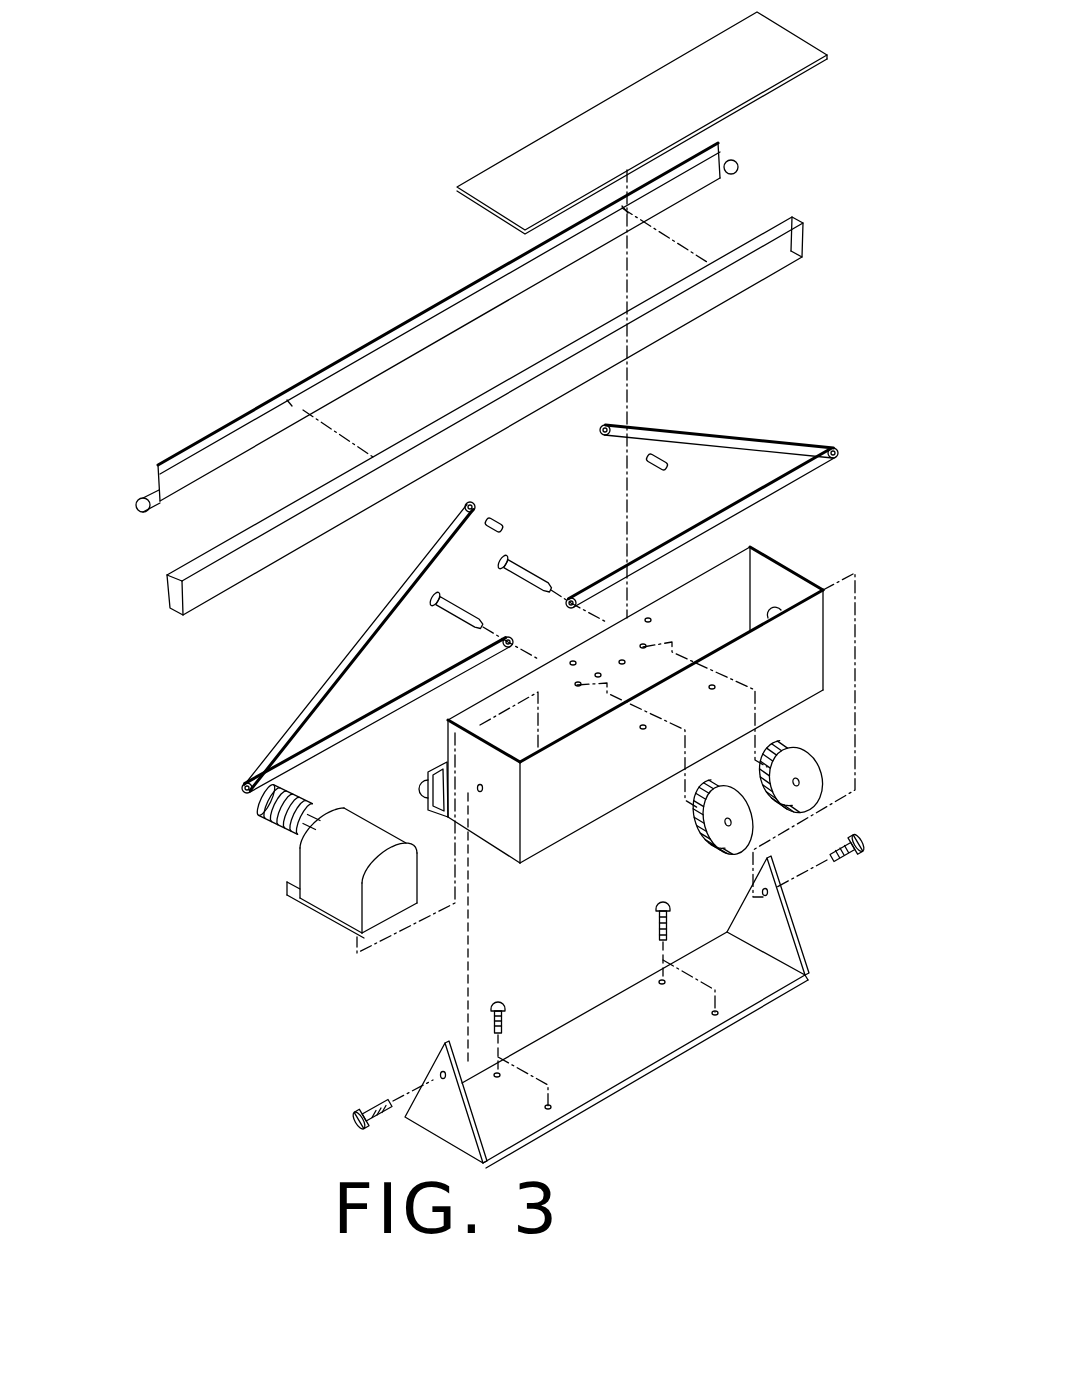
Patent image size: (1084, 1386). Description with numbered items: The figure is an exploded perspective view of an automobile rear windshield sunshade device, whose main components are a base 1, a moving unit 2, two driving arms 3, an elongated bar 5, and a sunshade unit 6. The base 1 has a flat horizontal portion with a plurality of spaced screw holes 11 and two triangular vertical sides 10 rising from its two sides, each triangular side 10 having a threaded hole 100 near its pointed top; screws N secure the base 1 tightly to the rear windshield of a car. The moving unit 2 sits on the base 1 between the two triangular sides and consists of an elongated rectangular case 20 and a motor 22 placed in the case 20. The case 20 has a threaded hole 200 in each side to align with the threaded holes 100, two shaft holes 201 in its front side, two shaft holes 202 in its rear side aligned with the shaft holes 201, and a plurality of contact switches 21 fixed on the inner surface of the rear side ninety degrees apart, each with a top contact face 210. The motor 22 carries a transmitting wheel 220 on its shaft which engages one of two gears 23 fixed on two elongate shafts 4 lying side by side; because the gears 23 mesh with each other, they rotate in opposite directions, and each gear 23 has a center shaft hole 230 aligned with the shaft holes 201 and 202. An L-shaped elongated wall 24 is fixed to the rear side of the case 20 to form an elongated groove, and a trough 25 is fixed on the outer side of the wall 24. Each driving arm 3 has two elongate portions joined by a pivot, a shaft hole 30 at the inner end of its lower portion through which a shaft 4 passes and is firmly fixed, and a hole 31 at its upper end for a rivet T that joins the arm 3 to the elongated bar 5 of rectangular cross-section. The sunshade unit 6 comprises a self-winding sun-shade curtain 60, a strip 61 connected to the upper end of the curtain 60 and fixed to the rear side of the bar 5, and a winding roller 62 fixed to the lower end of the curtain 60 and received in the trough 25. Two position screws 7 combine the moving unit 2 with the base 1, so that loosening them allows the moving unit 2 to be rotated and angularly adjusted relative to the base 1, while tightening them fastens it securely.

The base 1 is at (810, 983).
The triangular vertical side 10 is at (783, 945).
The threaded hole 100 is at (767, 895).
The base hole 11 is at (718, 1017).
The moving unit 2 is at (670, 678).
The elongated rectangular case 20 is at (763, 567).
The threaded hole 200 is at (480, 790).
The shaft hole 201 is at (645, 730).
The shaft hole 202 is at (643, 647).
The contact switch 21 is at (622, 662).
The top contact face 210 is at (648, 618).
The motor 22 is at (322, 905).
The transmitting wheel 220 is at (282, 838).
The gear 23 is at (803, 760).
The center shaft hole 230 is at (794, 784).
The L-shaped elongated wall 24 is at (433, 817).
The trough 25 is at (418, 784).
The driving arm 3 is at (770, 428).
The shaft hole 30 is at (572, 596).
The hole 31 is at (601, 431).
The elongate shaft 4 is at (517, 572).
The elongated bar 5 is at (795, 270).
The sunshade unit 6 is at (750, 163).
The self-winding sun-shade curtain 60 is at (707, 165).
The strip 61 is at (240, 423).
The winding roller 62 is at (732, 172).
The position screw 7 is at (355, 1113).
The screw N is at (507, 1007).
The rivet T is at (504, 521).